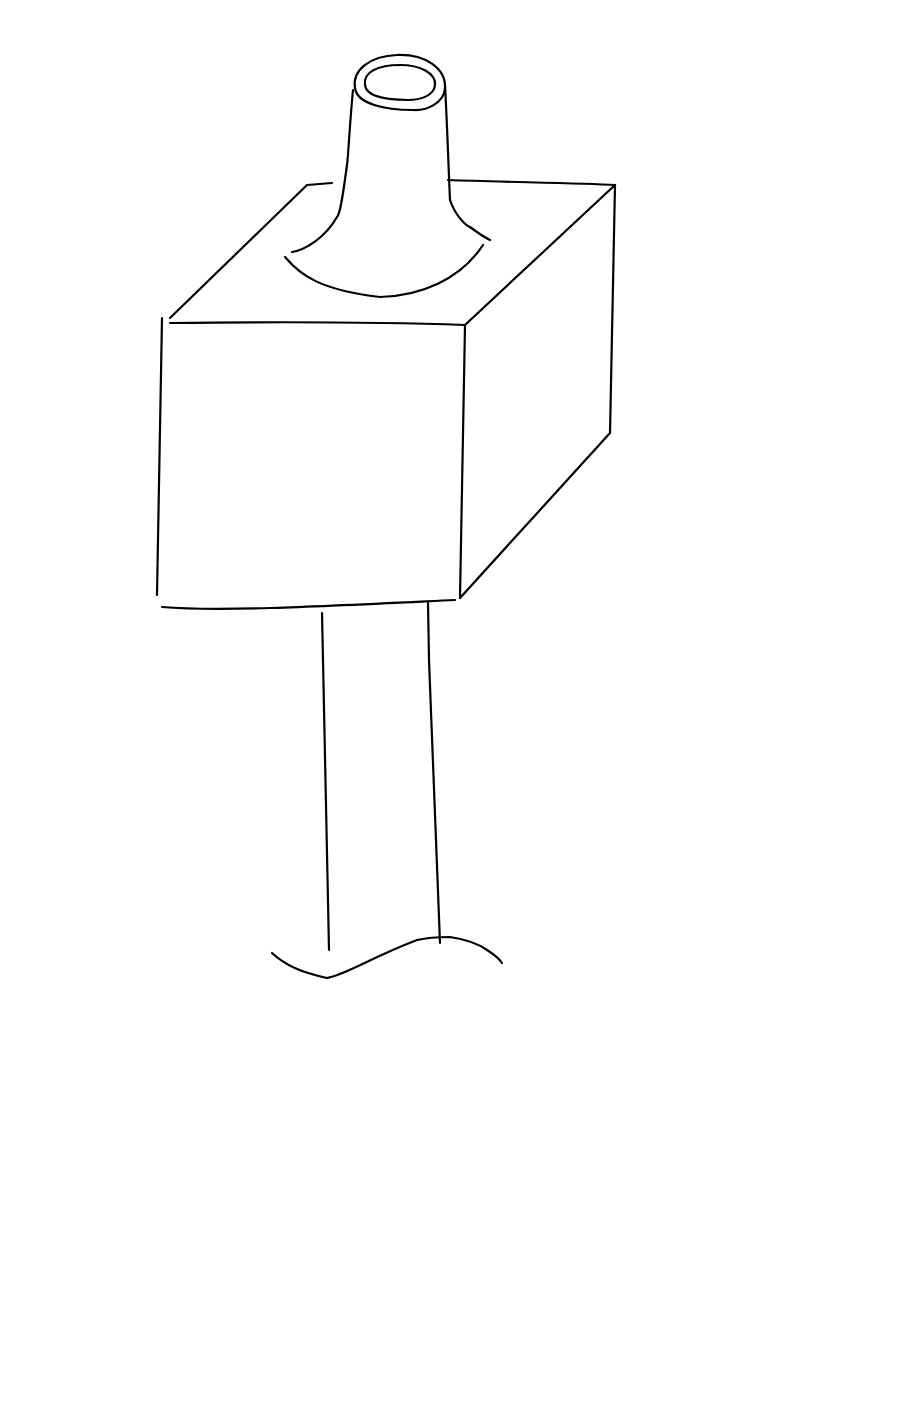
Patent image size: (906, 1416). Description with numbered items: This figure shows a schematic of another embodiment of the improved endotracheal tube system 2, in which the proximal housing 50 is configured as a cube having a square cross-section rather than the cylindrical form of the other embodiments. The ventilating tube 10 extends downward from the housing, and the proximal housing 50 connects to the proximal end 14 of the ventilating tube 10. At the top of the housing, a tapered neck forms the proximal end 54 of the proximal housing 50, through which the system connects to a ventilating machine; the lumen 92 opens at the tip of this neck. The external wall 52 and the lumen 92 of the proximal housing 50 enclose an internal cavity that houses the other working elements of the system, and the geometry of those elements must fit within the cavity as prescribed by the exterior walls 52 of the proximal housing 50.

The improved endotracheal tube system 2 is at (99, 928).
The ventilating tube 10 is at (435, 788).
The proximal end of ventilating tube 14 is at (428, 605).
The proximal housing 50 is at (730, 593).
The external wall 52 is at (617, 267).
The proximal end of proximal housing 54 is at (447, 122).
The lumen 92 is at (428, 72).